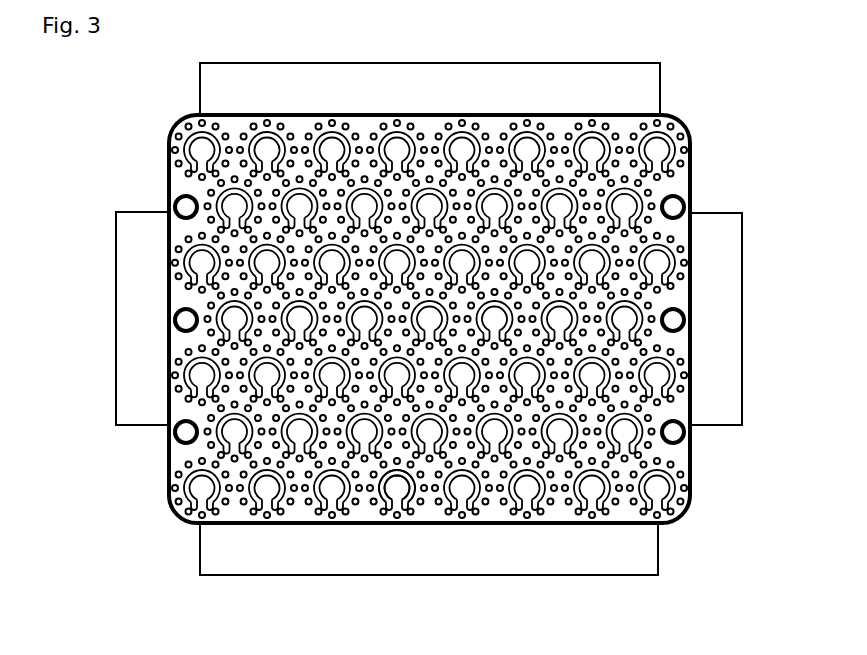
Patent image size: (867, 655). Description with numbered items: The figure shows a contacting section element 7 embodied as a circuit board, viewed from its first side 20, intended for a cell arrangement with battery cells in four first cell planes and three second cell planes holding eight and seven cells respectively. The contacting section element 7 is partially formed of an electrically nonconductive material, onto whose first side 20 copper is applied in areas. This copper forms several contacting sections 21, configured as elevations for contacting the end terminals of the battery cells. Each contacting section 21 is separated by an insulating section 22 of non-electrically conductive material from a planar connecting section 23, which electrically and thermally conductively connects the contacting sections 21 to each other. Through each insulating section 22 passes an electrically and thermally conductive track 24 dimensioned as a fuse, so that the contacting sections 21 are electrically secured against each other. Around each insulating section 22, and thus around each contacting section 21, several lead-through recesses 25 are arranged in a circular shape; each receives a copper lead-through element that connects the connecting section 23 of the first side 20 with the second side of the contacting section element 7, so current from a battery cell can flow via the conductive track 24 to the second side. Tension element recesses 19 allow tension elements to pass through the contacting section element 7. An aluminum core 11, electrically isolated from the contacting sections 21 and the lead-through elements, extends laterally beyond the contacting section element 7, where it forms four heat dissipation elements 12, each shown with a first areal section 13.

The contacting section element 7 is at (703, 105).
The core 11 is at (372, 75).
The heat dissipation element 12 is at (422, 73).
The first areal section 13 is at (470, 73).
The tension element recess 19 is at (180, 205).
The first side 20 is at (680, 177).
The contacting section 21 is at (527, 490).
The insulating section 22 is at (503, 507).
The connecting section 23 is at (305, 515).
The conductive track 24 is at (403, 510).
The lead-through recess 25 is at (617, 137).